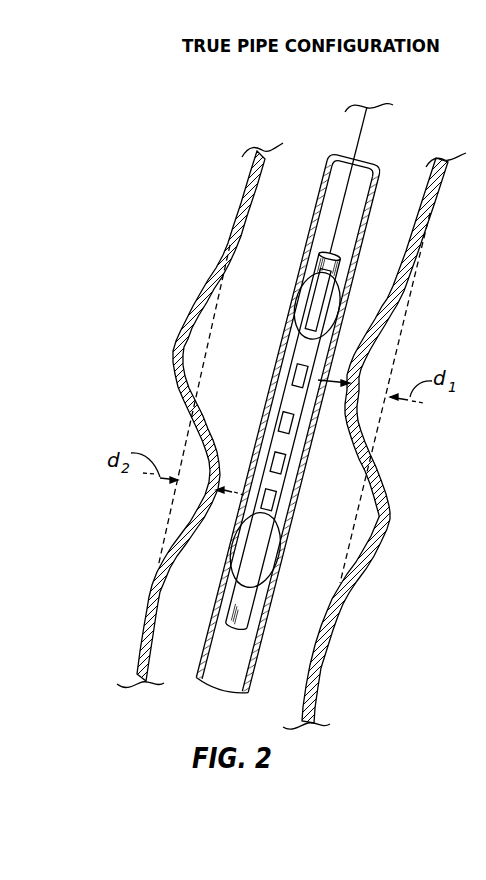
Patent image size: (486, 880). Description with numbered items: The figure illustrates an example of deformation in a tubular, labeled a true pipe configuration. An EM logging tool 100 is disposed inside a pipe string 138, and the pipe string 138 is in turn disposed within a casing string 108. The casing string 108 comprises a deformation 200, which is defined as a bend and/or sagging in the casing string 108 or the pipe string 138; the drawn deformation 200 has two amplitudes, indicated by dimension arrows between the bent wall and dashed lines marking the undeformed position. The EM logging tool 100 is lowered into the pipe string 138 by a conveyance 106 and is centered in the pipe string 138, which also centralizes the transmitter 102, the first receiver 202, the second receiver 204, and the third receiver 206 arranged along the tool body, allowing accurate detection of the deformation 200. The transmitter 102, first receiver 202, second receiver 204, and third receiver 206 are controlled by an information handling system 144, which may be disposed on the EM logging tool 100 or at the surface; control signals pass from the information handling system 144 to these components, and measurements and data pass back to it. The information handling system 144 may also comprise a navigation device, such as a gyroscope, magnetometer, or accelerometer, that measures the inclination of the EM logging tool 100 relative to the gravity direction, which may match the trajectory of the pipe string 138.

The EM logging tool 100 is at (332, 248).
The transmitter 102 is at (297, 376).
The conveyance 106 is at (357, 154).
The casing string 108 is at (256, 171).
The pipe string 138 is at (328, 170).
The information handling system 144 is at (322, 290).
The deformation 200 is at (180, 266).
The first receiver 202 is at (283, 422).
The second receiver 204 is at (280, 462).
The third receiver 206 is at (268, 500).